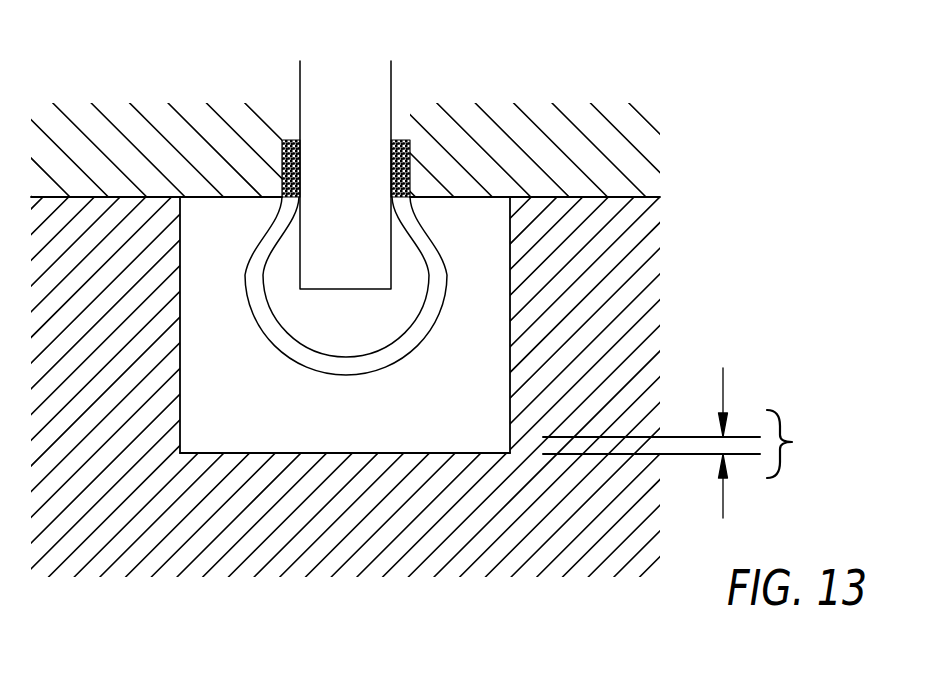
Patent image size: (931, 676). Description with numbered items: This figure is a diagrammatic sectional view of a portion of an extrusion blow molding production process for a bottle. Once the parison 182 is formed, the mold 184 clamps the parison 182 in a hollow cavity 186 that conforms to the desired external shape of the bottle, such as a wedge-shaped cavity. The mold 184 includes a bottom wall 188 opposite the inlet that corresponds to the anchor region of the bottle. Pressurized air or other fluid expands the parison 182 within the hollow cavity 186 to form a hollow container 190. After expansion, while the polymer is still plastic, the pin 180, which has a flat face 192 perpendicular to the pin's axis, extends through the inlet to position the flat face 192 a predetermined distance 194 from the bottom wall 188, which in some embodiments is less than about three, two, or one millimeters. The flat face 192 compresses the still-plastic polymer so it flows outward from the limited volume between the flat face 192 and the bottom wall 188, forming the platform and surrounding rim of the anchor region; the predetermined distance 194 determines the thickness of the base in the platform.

The pin 180 is at (367, 118).
The parison 182 is at (410, 160).
The mold 184 is at (465, 340).
The hollow cavity 186 is at (213, 223).
The bottom wall 188 is at (287, 453).
The hollow container 190 is at (303, 318).
The flat face 192 is at (372, 289).
The predetermined distance 194 is at (792, 442).